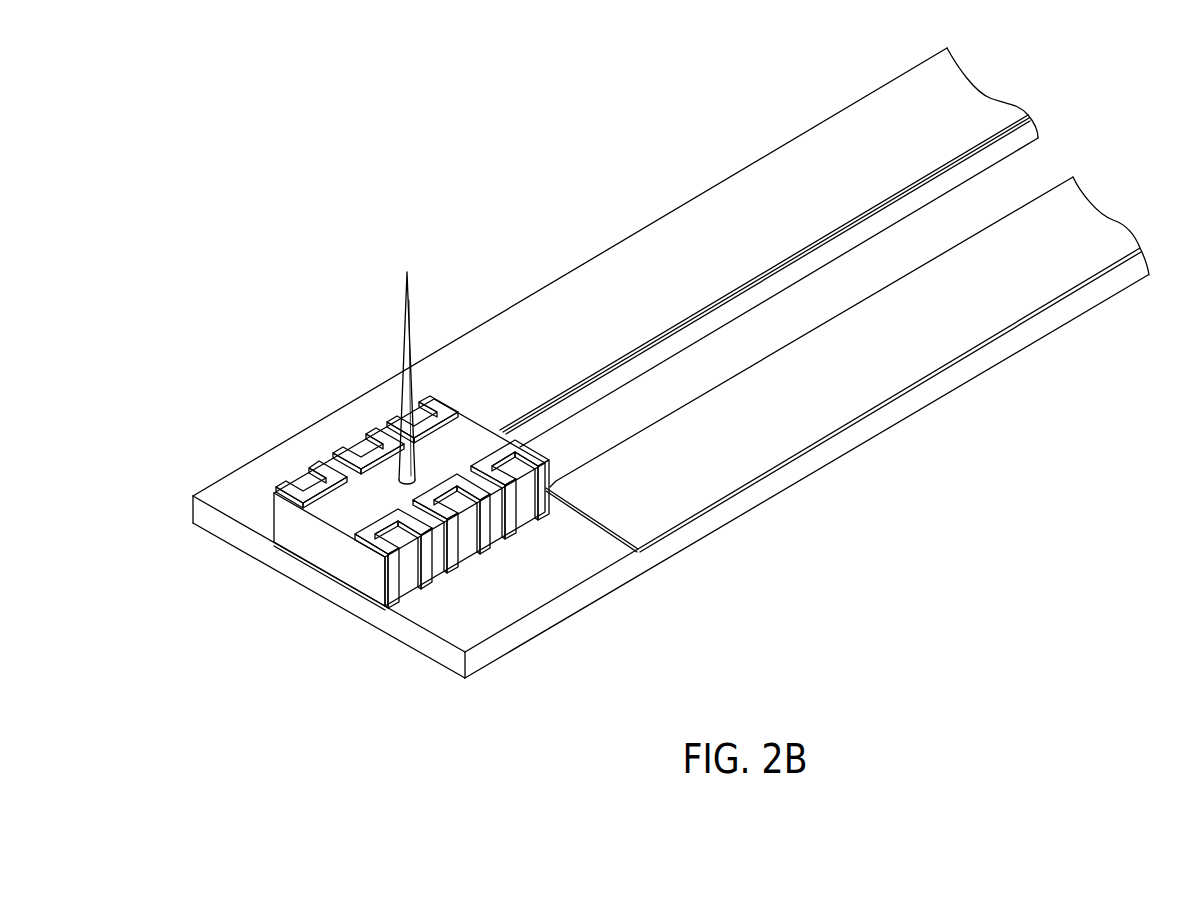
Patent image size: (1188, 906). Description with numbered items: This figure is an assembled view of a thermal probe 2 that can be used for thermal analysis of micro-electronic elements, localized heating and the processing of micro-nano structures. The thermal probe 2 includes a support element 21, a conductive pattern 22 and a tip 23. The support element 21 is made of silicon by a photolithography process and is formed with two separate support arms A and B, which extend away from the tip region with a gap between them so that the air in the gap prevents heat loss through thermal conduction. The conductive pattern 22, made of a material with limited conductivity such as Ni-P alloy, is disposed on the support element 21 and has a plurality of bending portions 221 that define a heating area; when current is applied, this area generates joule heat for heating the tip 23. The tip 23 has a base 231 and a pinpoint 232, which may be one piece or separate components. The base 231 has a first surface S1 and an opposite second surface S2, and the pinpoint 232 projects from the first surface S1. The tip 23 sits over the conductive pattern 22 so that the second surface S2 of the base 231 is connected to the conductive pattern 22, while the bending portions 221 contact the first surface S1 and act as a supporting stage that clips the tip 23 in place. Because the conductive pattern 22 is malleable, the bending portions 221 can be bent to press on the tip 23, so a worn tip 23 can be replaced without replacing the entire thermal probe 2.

The thermal probe 2 is at (318, 126).
The support element 21 is at (710, 540).
The conductive pattern 22 is at (824, 300).
The bending portions 221 is at (390, 490).
The tip 23 is at (353, 464).
The base 231 is at (385, 487).
The pinpoint 232 is at (402, 307).
The support arm A is at (836, 136).
The support arm B is at (1000, 317).
The first surface S1 is at (333, 500).
The second surface S2 is at (328, 573).